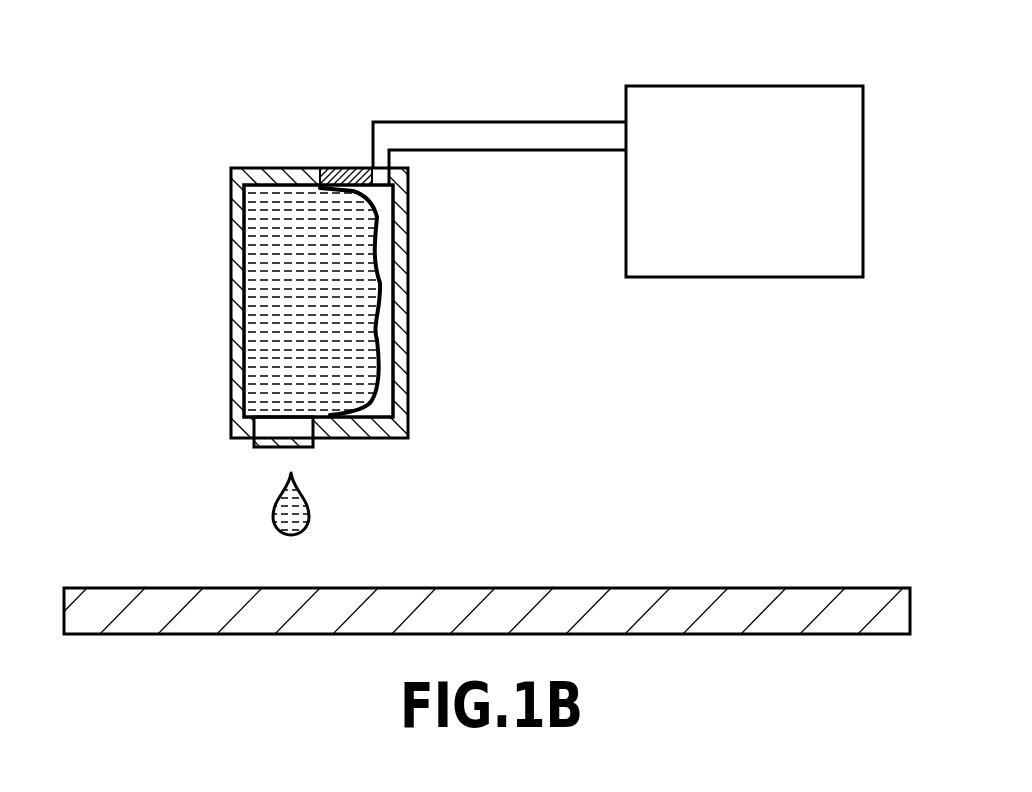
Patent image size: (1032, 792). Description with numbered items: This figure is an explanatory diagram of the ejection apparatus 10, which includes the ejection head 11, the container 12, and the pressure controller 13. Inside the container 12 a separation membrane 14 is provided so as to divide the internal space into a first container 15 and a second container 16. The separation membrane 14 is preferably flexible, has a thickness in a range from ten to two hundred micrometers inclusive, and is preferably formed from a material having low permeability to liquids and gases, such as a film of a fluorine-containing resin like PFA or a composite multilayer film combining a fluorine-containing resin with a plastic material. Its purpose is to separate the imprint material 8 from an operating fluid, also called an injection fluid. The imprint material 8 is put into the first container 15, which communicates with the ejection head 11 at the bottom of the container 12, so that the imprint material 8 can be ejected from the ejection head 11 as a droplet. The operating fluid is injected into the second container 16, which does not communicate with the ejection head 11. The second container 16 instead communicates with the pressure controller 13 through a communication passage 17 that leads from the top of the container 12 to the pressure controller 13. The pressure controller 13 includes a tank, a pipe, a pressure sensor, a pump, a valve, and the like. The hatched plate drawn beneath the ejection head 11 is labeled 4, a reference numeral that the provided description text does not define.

The ejection apparatus 10 is at (207, 117).
The container 12 is at (194, 162).
The first container 15 is at (287, 205).
The separation membrane 14 is at (380, 290).
The second container 16 is at (387, 240).
The ejection head 11 is at (300, 440).
The communication passage 17 is at (505, 120).
The pressure controller 13 is at (752, 86).
The imprint material 8 is at (310, 512).
The substrate 4 is at (710, 588).